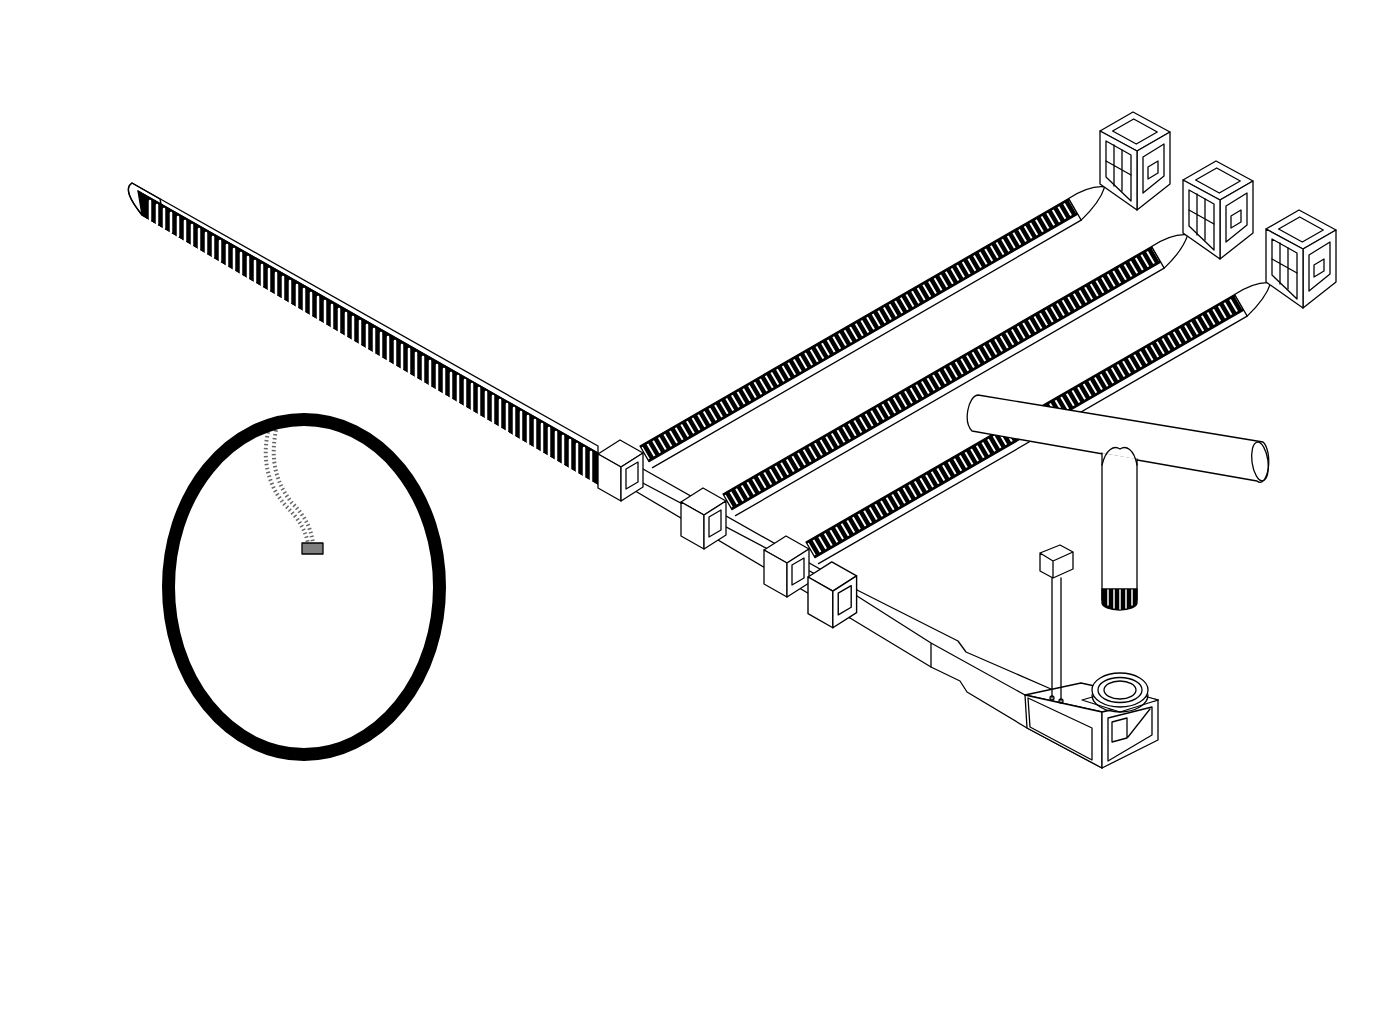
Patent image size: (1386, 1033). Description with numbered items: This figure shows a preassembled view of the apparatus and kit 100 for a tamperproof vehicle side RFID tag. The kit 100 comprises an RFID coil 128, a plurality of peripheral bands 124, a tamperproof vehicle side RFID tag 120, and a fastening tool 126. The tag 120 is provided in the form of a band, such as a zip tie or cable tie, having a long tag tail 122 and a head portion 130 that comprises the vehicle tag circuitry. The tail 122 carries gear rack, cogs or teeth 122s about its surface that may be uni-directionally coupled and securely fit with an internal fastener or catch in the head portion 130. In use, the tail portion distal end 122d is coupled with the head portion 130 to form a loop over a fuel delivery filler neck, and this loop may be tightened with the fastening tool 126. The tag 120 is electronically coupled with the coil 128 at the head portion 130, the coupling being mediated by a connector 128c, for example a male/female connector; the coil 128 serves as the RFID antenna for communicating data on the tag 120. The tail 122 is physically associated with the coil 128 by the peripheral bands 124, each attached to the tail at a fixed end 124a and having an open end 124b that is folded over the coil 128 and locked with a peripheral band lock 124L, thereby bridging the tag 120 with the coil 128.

The apparatus and kit 100 is at (364, 194).
The tamperproof vehicle side RFID tag 120 is at (564, 344).
The tag tail 122 is at (885, 632).
The tail portion distal end 122d is at (145, 198).
The teeth 122s is at (225, 253).
The peripheral band 124 is at (907, 280).
The peripheral band lock 124L is at (1087, 152).
The fixed end 124a is at (690, 543).
The open end 124b is at (1267, 292).
The fastening tool 126 is at (1228, 462).
The RFID coil 128 is at (247, 433).
The connector 128c is at (1045, 592).
The head portion 130 is at (1031, 754).